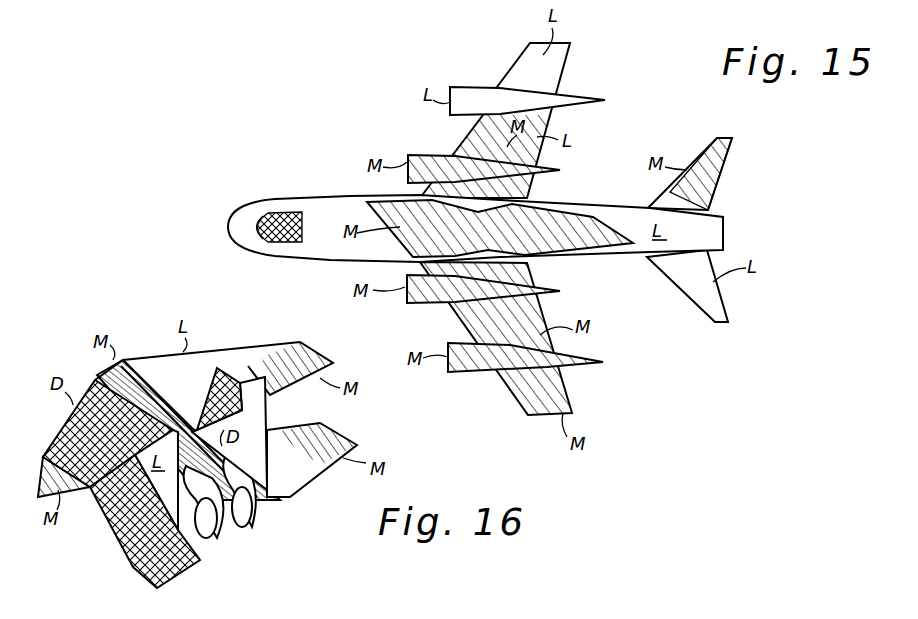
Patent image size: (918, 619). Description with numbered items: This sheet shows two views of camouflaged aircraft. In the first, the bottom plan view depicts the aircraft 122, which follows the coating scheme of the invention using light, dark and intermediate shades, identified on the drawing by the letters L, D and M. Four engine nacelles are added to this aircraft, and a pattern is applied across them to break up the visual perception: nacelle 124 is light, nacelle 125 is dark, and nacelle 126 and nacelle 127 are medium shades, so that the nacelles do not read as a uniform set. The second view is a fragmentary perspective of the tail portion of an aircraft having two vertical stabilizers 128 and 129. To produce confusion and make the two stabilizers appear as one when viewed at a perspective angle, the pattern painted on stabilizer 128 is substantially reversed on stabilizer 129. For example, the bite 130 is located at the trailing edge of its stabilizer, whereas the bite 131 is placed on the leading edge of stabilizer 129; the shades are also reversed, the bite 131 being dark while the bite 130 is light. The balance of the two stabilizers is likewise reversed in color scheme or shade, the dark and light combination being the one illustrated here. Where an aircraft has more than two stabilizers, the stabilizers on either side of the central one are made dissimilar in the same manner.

In FIG. 15, the aircraft 122 is at (345, 158).
In FIG. 15, the engine nacelle 124 is at (467, 372).
In FIG. 15, the engine nacelle 125 is at (420, 303).
In FIG. 15, the engine nacelle 126 is at (423, 157).
In FIG. 15, the engine nacelle 127 is at (472, 87).
In FIG. 16, the vertical stabilizer 128 is at (108, 433).
In FIG. 16, the vertical stabilizer 129 is at (262, 410).
In FIG. 16, the bite 130 is at (152, 508).
In FIG. 16, the bite 131 is at (210, 390).